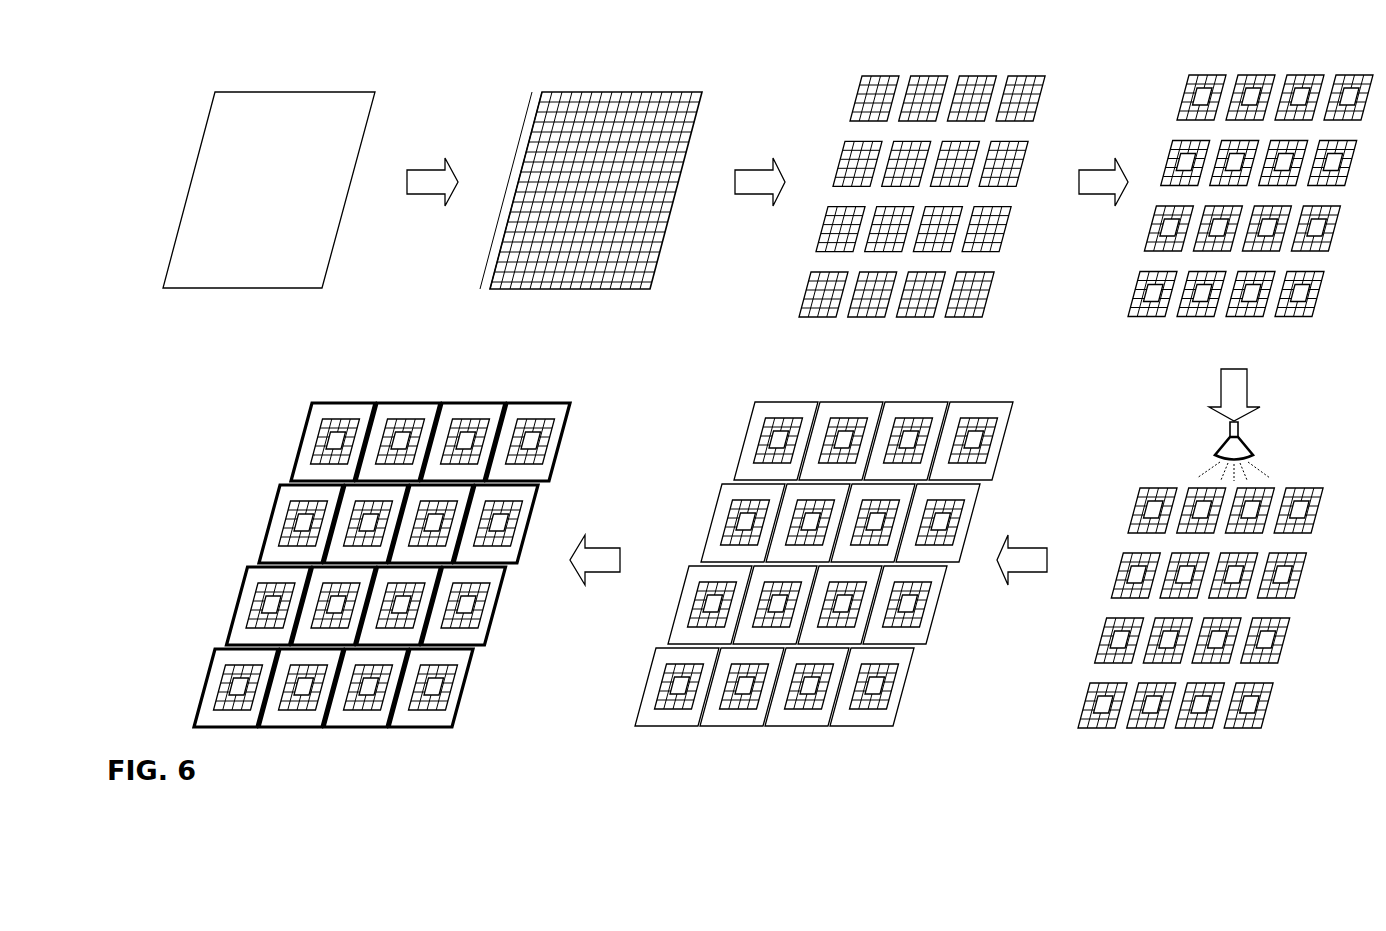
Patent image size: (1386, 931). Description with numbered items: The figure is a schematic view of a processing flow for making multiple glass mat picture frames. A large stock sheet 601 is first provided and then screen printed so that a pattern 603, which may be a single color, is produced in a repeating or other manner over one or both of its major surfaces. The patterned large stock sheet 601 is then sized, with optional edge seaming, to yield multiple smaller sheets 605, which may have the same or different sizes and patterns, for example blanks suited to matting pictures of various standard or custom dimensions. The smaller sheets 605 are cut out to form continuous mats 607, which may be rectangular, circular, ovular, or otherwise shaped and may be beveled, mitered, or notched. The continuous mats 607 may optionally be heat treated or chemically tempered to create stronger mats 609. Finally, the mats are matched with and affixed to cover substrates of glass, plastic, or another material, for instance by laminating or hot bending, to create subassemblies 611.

The large stock sheet 601 is at (328, 270).
The pattern 603 is at (655, 272).
The smaller sheets 605 is at (817, 318).
The continuous mats 607 is at (1146, 317).
The stronger mats 609 is at (1096, 728).
The subassemblies 611 is at (667, 726).